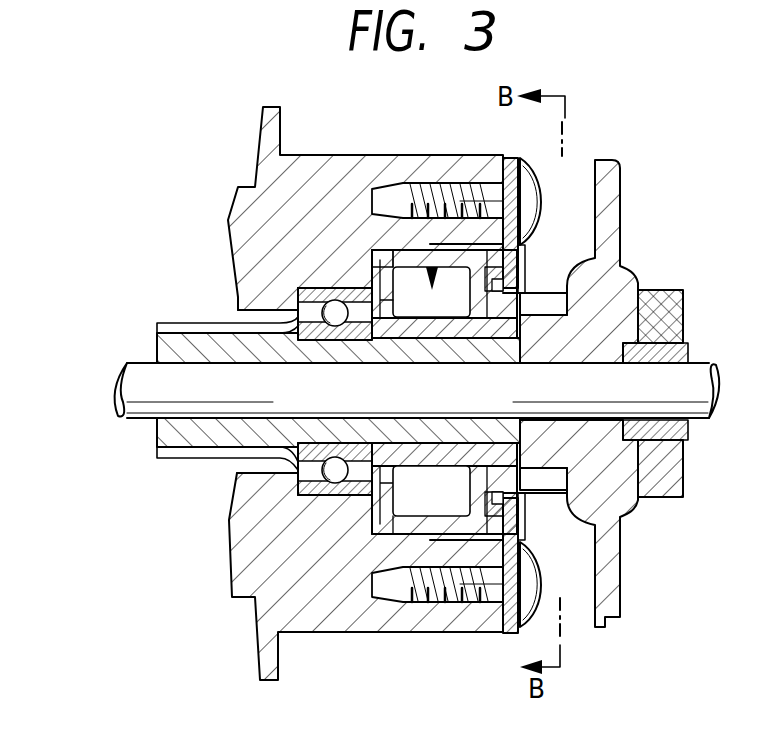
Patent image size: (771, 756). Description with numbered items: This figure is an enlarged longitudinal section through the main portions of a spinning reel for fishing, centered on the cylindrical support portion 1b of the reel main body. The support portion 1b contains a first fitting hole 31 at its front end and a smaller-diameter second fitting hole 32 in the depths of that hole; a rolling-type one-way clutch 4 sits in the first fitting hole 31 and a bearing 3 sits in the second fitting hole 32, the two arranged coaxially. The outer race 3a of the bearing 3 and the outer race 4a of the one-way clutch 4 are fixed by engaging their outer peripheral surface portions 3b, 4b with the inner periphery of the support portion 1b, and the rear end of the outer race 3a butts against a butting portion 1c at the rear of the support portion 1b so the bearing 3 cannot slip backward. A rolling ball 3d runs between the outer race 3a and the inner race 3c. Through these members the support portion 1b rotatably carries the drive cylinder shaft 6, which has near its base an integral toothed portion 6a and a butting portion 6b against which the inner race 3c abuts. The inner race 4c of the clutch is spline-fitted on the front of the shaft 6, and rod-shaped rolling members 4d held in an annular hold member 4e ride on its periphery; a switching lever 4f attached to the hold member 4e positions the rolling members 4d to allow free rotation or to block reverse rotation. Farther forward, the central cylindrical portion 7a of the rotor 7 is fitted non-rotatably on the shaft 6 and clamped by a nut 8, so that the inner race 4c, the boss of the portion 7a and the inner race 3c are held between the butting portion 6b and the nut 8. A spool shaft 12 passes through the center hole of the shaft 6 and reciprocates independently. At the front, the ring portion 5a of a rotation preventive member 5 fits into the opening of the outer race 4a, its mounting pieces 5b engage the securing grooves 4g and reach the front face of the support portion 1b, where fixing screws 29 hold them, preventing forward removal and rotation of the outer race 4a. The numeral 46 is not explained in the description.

The support portion 1b is at (335, 620).
The butting portion 1c is at (250, 300).
The bearing 3 is at (242, 467).
The outer race 3a is at (300, 292).
The outer peripheral surface portion 3b is at (327, 500).
The inner race 3c is at (336, 468).
The rolling ball 3d is at (338, 318).
The one-way clutch 4 is at (410, 253).
The outer race 4a is at (438, 530).
The outer peripheral surface portion 4b is at (405, 545).
The inner race 4c is at (472, 328).
The rolling members 4d is at (452, 495).
The annular hold member 4e is at (432, 267).
The switching lever 4f is at (503, 280).
The securing grooves 4g is at (360, 253).
The rotation preventive member 5 is at (510, 550).
The ring portion 5a is at (521, 255).
The mounting pieces 5b is at (510, 158).
The drive cylinder shaft 6 is at (167, 437).
The toothed portion 6a is at (188, 458).
The butting portion 6b is at (297, 328).
The rotor 7 is at (612, 220).
The central cylindrical portion 7a is at (625, 513).
The nut 8 is at (683, 313).
The spool shaft 12 is at (132, 390).
The fixing screws 29 is at (510, 197).
The first fitting hole 31 is at (356, 245).
The second fitting hole 32 is at (300, 484).
The passage 46 is at (380, 257).